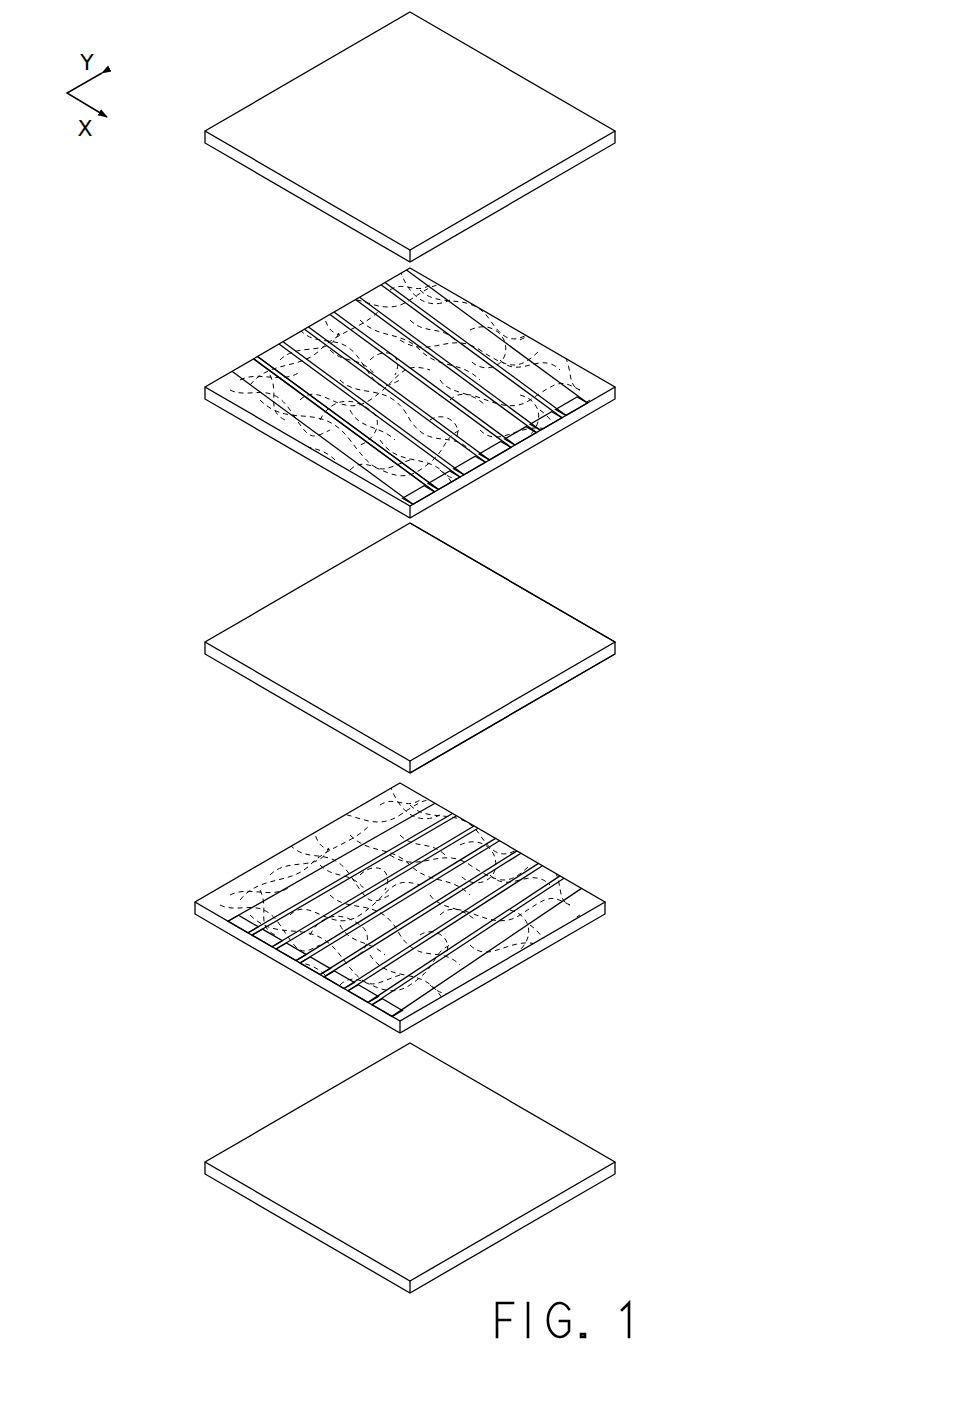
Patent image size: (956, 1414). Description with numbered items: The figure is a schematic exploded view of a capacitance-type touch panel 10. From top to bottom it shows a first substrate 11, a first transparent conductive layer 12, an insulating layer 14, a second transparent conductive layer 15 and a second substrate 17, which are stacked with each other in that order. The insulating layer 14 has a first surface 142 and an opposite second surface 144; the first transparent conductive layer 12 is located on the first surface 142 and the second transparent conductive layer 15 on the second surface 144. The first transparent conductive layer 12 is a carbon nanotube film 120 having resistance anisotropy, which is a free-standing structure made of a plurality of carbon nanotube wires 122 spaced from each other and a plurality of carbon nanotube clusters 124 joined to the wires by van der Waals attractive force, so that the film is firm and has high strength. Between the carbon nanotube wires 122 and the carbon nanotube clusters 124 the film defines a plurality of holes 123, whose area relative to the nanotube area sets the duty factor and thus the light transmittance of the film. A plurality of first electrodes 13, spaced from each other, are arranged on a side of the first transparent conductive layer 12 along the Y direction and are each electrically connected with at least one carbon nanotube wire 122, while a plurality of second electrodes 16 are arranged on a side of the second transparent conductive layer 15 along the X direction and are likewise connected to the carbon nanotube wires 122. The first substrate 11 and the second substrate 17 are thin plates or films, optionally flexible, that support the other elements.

The capacitance-type touch panel 10 is at (287, 37).
The first substrate 11 is at (520, 98).
The first transparent conductive layer 12 is at (272, 340).
The carbon nanotube film 120 is at (533, 260).
The carbon nanotube wires 122 is at (438, 320).
The holes 123 is at (323, 342).
The carbon nanotube clusters 124 is at (460, 347).
The first electrodes 13 is at (582, 408).
The insulating layer 14 is at (508, 602).
The first surface 142 is at (563, 650).
The second surface 144 is at (577, 680).
The second transparent conductive layer 15 is at (293, 823).
The second electrodes 16 is at (280, 948).
The second substrate 17 is at (542, 1147).